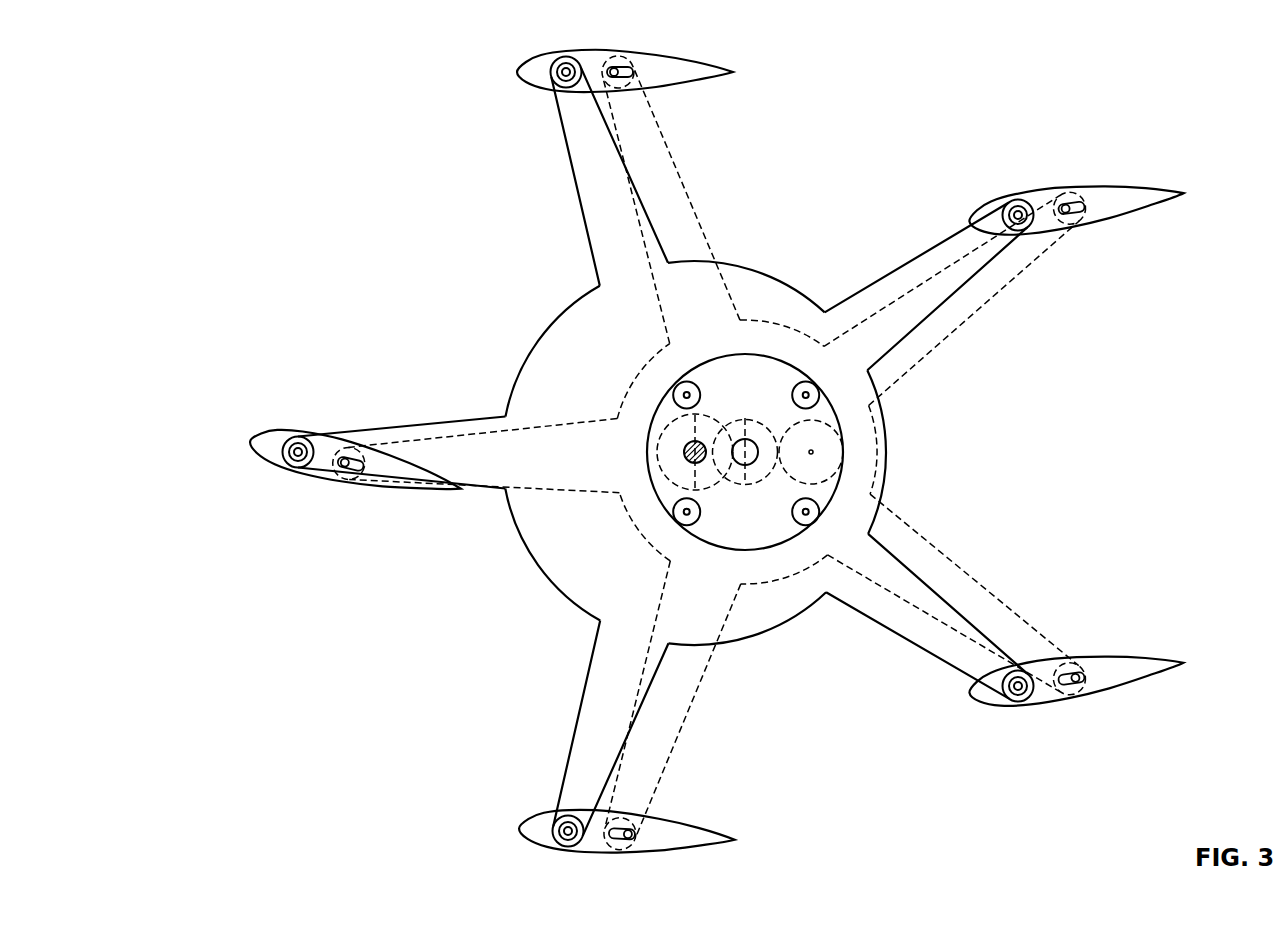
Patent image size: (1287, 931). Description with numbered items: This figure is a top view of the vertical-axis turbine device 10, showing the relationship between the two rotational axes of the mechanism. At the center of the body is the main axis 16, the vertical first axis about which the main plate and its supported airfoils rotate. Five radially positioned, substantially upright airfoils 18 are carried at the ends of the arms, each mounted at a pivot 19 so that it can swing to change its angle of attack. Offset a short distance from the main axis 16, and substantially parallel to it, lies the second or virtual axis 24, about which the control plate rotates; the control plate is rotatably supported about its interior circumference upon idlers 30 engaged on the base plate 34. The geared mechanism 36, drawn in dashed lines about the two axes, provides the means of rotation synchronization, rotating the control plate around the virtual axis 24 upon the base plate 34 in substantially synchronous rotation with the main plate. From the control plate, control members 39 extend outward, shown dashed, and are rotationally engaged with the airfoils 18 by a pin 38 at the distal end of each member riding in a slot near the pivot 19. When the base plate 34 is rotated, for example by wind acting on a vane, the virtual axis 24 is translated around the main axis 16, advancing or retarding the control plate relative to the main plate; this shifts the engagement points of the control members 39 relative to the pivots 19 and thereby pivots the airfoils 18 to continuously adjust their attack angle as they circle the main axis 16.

The device 10 is at (254, 91).
The main axis 16 is at (697, 431).
The airfoils 18 is at (700, 82).
The pivots 19 is at (563, 57).
The virtual axis 24 is at (745, 428).
The idlers 30 is at (684, 381).
The base plate 34 is at (546, 346).
The geared mechanism 36 is at (726, 483).
The pin 38 is at (616, 66).
The control members 39 is at (682, 212).